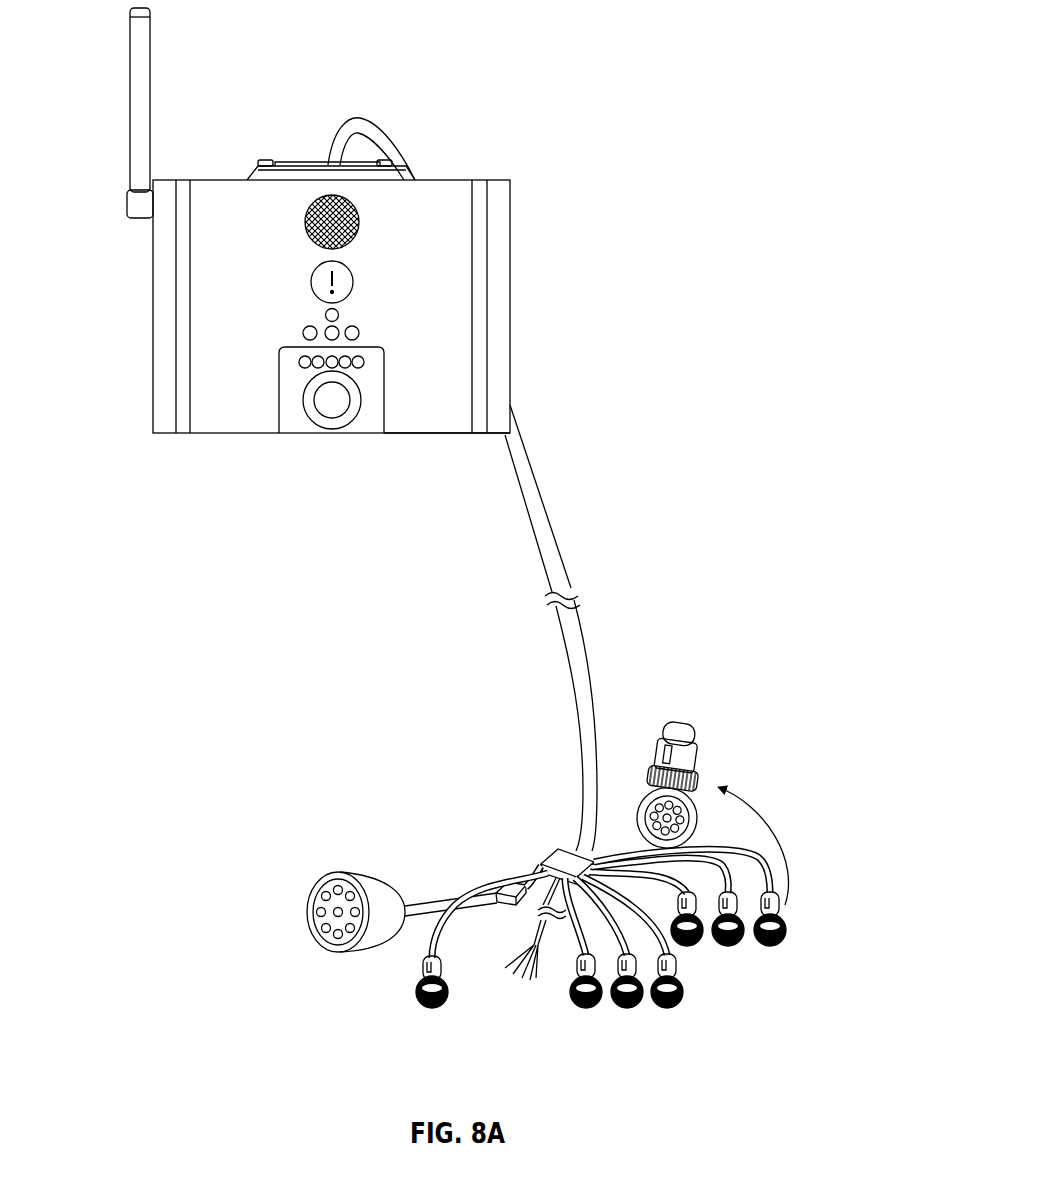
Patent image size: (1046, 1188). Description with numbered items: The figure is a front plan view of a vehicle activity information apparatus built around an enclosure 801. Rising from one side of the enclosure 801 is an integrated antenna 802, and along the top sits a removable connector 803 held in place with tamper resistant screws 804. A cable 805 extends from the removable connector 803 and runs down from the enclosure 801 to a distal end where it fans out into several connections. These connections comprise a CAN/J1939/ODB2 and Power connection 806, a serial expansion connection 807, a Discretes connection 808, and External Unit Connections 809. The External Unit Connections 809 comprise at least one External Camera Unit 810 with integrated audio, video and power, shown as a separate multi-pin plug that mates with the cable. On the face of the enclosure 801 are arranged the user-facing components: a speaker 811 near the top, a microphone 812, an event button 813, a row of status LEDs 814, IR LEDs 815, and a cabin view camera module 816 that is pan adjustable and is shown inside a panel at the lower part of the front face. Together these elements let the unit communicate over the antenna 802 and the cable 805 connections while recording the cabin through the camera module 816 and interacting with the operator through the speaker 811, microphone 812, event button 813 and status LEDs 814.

The enclosure 801 is at (153, 317).
The integrated antenna 802 is at (130, 67).
The removable connector 803 is at (312, 162).
The tamper resistant screws 804 is at (264, 160).
The cable 805 is at (385, 134).
The CAN/J1939/ODB2 and Power connection 806 is at (308, 912).
The RS-232 Expansion connection 807 is at (418, 975).
The Discretes connection 808 is at (527, 988).
The External Unit Connections 809 is at (727, 969).
The External Camera Unit 810 is at (698, 770).
The speaker 811 is at (360, 223).
The microphone 812 is at (326, 314).
The event button 813 is at (354, 282).
The status LEDs 814 is at (359, 333).
The IR LEDs 815 is at (415, 435).
The cabin view camera module 816 is at (332, 403).